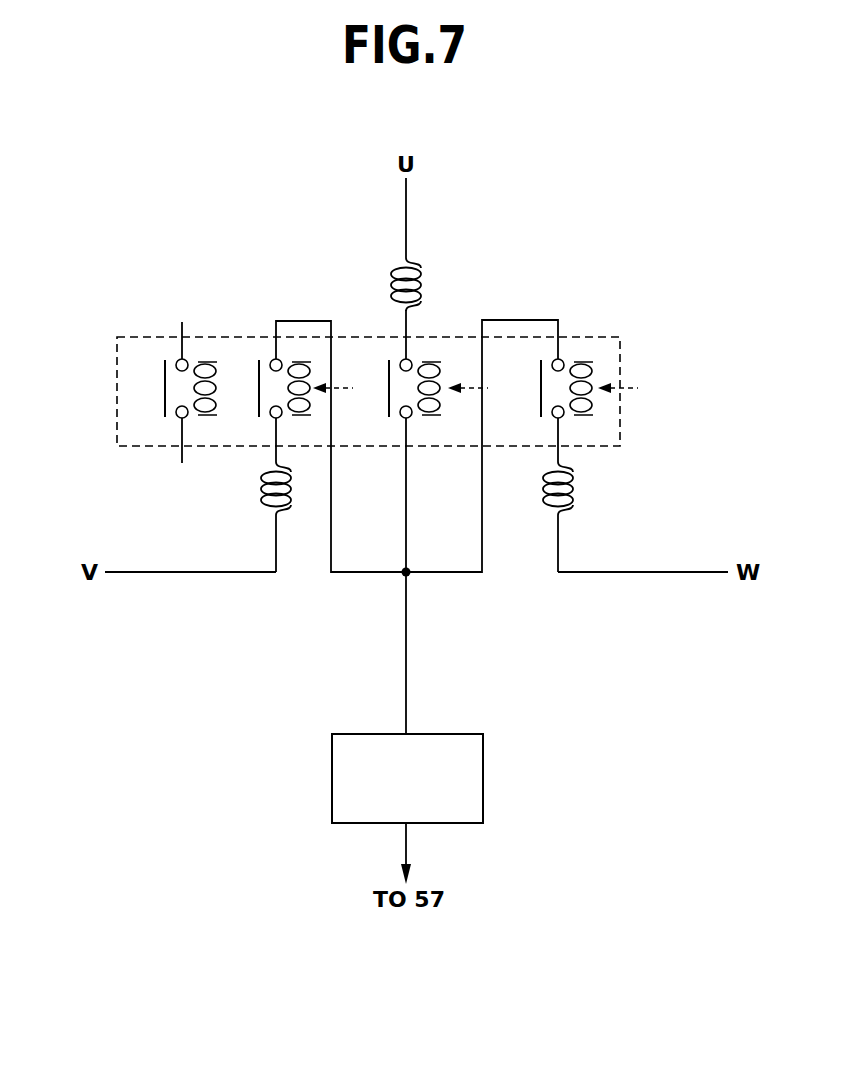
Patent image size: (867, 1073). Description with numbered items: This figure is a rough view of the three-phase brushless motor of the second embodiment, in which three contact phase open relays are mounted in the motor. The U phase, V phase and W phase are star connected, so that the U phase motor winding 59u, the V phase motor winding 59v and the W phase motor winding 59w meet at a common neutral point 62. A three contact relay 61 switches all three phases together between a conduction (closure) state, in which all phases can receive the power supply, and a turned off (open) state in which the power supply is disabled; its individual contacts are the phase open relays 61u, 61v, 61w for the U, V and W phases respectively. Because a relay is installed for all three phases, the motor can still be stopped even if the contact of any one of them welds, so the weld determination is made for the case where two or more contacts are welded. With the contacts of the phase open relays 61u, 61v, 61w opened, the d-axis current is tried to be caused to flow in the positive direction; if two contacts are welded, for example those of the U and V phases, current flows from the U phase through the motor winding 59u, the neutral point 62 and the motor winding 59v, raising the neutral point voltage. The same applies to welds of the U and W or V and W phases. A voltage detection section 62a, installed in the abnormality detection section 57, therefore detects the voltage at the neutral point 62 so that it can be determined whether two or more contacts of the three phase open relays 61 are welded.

The abnormality detection section 57 is at (489, 389).
The U phase motor winding 59u is at (421, 290).
The V phase motor winding 59v is at (262, 490).
The W phase motor winding 59w is at (573, 490).
The three contact relay 61 is at (332, 408).
The U phase open relay 61u is at (387, 375).
The V phase open relay 61v is at (258, 377).
The W phase open relay 61w is at (541, 398).
The neutral point 62 is at (409, 575).
The voltage detection section 62a is at (460, 742).